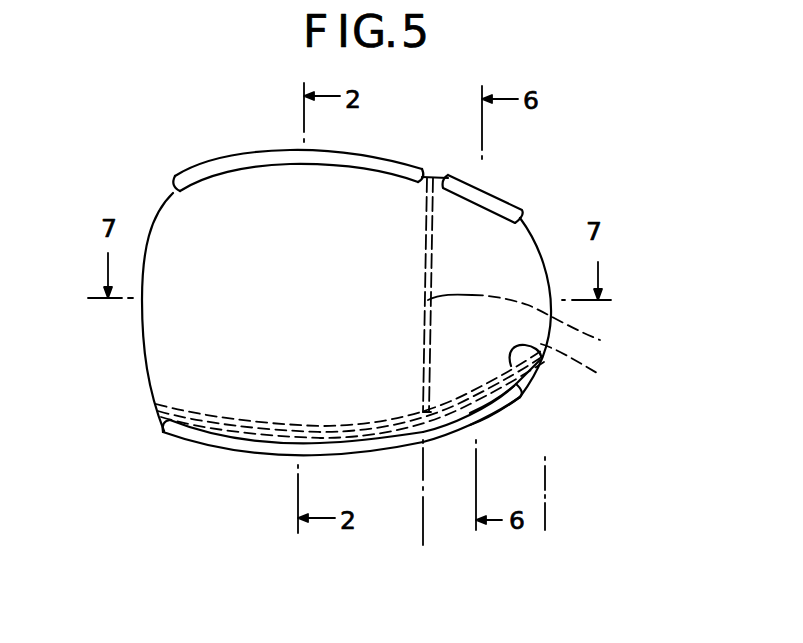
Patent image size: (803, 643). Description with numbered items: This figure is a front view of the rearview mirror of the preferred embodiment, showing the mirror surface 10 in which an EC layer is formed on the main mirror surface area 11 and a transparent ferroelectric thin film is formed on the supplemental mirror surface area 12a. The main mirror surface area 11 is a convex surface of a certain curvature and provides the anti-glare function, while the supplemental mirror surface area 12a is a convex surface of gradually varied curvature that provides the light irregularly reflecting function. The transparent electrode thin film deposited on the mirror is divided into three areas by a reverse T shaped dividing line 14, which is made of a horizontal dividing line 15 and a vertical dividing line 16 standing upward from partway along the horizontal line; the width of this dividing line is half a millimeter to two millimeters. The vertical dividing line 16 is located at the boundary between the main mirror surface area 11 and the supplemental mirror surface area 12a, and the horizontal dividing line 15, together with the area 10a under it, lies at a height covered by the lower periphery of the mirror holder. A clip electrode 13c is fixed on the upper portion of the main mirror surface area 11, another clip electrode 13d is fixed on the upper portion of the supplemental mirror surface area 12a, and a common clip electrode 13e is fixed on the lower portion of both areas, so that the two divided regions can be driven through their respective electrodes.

The mirror surface 10 is at (132, 352).
The area under the horizontal dividing line 10a is at (216, 429).
The main mirror surface area 11 is at (417, 539).
The supplemental mirror surface area 12a is at (545, 547).
The clip electrode 13c is at (180, 175).
The clip electrode 13d is at (518, 212).
The common clip electrode 13e is at (522, 395).
The reverse T shaped dividing line 14 is at (642, 329).
The horizontal dividing line 15 is at (399, 391).
The vertical dividing line 16 is at (397, 360).